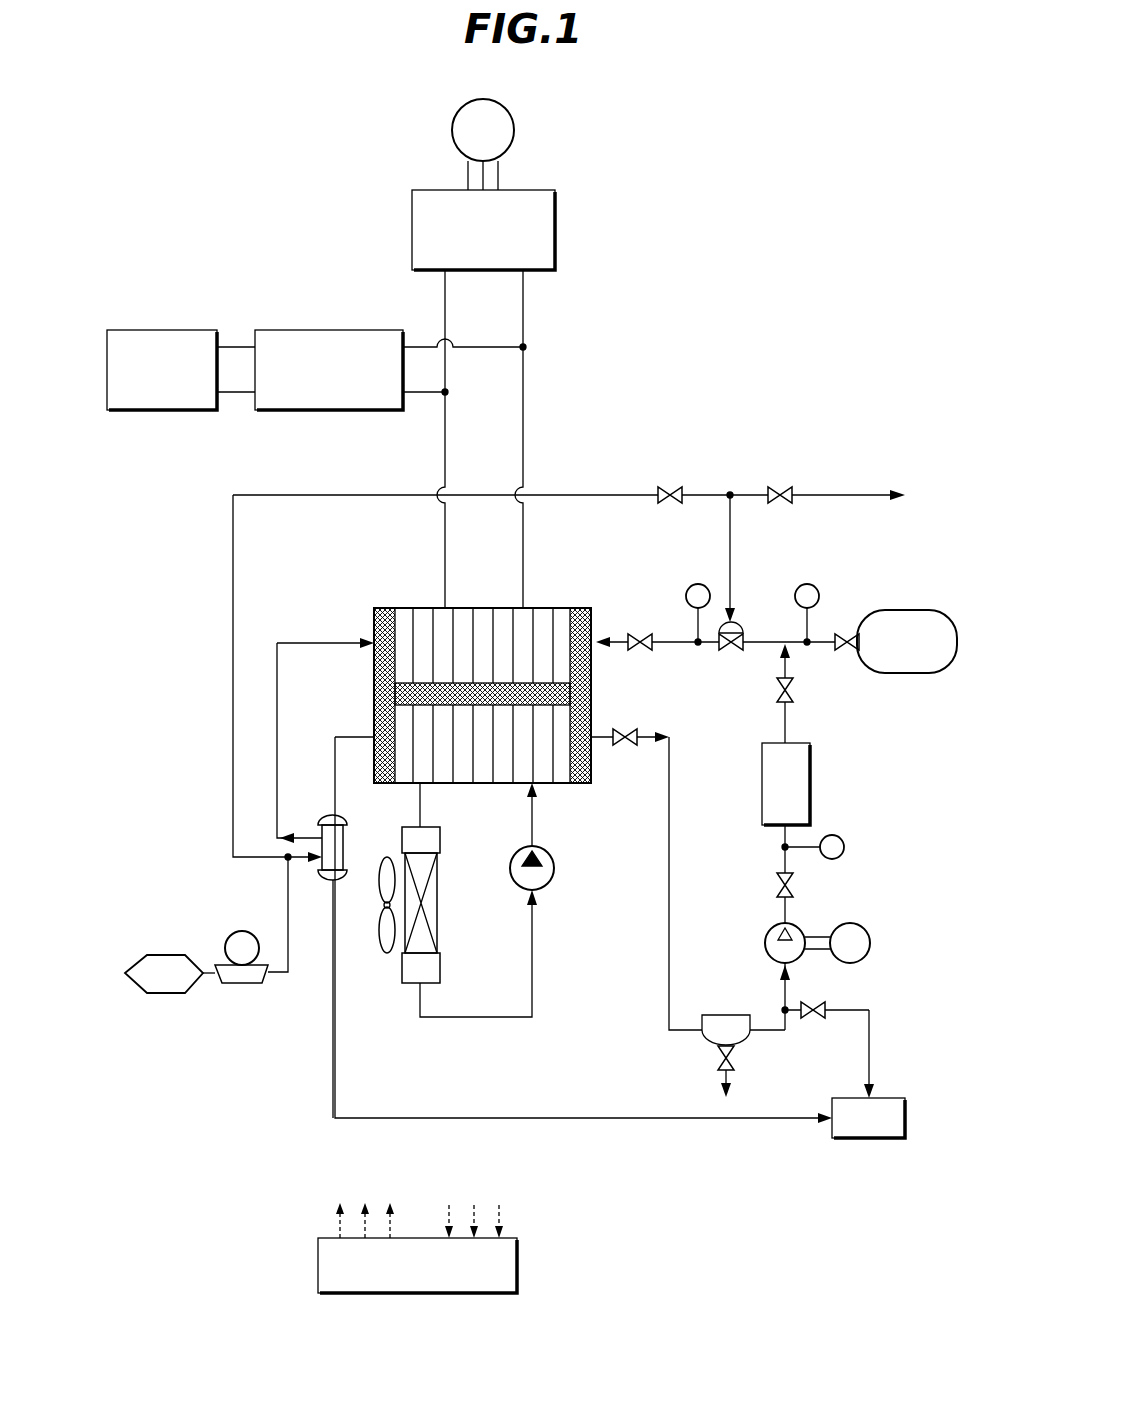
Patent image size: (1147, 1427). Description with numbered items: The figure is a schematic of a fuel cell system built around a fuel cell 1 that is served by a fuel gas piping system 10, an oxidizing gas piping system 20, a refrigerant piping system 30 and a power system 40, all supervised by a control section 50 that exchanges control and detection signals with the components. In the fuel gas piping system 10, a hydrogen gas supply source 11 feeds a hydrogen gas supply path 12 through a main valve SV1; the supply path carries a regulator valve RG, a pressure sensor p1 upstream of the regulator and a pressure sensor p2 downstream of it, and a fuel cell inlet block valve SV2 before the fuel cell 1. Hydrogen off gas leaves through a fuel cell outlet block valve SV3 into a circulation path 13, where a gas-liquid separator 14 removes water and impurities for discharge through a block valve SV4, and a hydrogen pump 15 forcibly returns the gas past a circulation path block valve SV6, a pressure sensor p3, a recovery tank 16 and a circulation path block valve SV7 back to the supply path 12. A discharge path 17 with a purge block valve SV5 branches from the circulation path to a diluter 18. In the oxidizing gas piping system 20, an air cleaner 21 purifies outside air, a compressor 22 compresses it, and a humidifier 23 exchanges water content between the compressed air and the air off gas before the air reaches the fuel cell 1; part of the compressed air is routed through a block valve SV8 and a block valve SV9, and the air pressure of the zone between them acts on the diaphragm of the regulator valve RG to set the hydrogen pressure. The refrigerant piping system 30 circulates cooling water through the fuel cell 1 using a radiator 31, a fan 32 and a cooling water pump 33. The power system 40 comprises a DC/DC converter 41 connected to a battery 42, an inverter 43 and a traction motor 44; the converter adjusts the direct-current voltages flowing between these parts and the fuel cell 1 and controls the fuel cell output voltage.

The fuel cell 1 is at (560, 607).
The fuel gas piping system 10 is at (882, 757).
The hydrogen gas supply source 11 is at (914, 609).
The hydrogen gas supply path 12 is at (815, 645).
The circulation path 13 is at (669, 930).
The gas-liquid separator 14 is at (720, 1013).
The hydrogen pump 15 is at (803, 927).
The recovery tank 16 is at (811, 786).
The discharge path 17 is at (860, 1008).
The diluter 18 is at (892, 1097).
The oxidizing gas piping system 20 is at (204, 1018).
The air cleaner 21 is at (165, 955).
The compressor 22 is at (243, 931).
The humidifier 23 is at (346, 818).
The refrigerant piping system 30 is at (475, 1034).
The radiator 31 is at (441, 838).
The fan 32 is at (380, 902).
The cooling water pump 33 is at (556, 870).
The power system 40 is at (555, 349).
The DC/DC converter 41 is at (315, 330).
The battery 42 is at (155, 330).
The inverter 43 is at (558, 228).
The traction motor 44 is at (514, 134).
The control section 50 is at (520, 1272).
The main valve SV1 is at (843, 633).
The fuel cell inlet block valve SV2 is at (638, 633).
The fuel cell outlet block valve SV3 is at (630, 728).
The block valve for the gas-liquid separator SV4 is at (716, 1052).
The purge block valve SV5 is at (814, 1022).
The circulation path block valve SV6 is at (797, 885).
The circulation path block valve SV7 is at (795, 698).
The block valve SV8 is at (667, 487).
The block valve SV9 is at (775, 487).
The regulator valve RG is at (741, 628).
The pressure sensor p1 is at (804, 584).
The pressure sensor p2 is at (694, 584).
The pressure sensor p3 is at (845, 846).